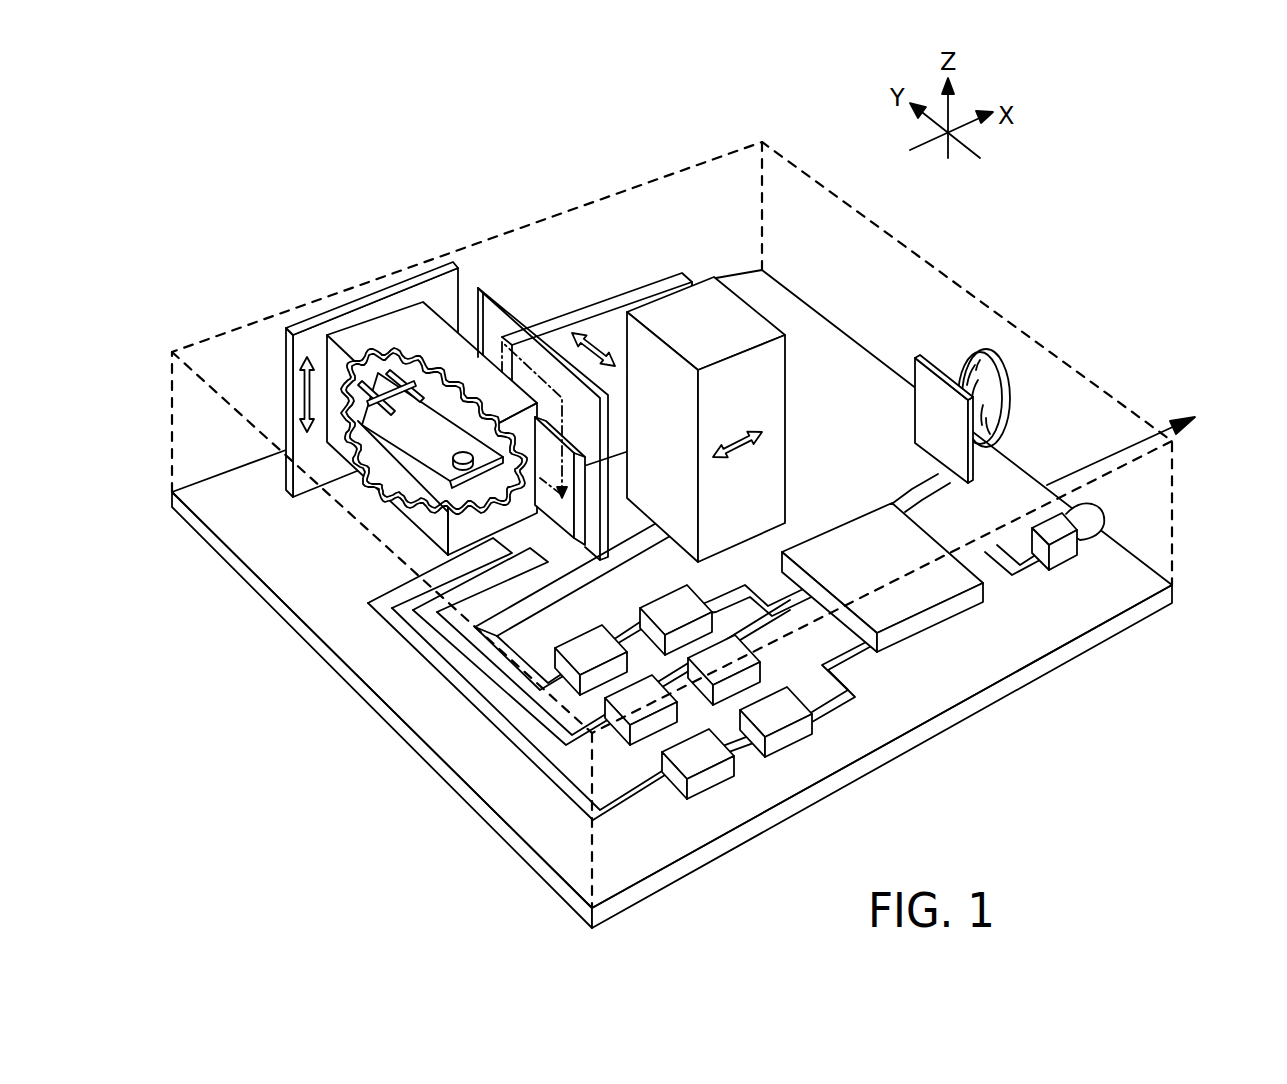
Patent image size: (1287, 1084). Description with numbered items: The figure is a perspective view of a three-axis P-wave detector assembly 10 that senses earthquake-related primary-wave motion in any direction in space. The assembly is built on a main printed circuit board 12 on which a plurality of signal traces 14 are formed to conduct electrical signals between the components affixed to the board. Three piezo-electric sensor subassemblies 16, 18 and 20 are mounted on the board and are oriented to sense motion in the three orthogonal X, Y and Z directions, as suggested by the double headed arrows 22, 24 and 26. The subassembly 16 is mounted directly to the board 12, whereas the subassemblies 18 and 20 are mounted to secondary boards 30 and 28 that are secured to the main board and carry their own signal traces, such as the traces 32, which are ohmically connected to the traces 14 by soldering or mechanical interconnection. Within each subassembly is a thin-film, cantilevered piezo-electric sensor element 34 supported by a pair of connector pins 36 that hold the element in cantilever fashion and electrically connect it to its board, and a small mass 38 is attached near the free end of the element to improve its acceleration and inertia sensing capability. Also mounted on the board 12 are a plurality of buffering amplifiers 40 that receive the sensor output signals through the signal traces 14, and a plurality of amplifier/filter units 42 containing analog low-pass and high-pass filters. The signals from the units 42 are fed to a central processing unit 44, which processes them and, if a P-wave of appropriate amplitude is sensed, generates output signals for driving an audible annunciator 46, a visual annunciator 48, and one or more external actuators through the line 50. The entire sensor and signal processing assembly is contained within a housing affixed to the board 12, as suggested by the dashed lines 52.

The detector assembly 10 is at (672, 599).
The main printed circuit board 12 is at (518, 852).
The signal traces 14 is at (488, 630).
The piezo-electric sensor subassembly 16 is at (735, 383).
The piezo-electric sensor subassembly 18 is at (597, 360).
The piezo-electric sensor subassembly 20 is at (426, 408).
The double headed arrow 22 is at (742, 457).
The double headed arrow 24 is at (600, 340).
The double headed arrow 26 is at (297, 395).
The secondary board 28 is at (342, 357).
The secondary board 30 is at (500, 297).
The signal traces 32 is at (577, 523).
The piezo-electric sensor element 34 is at (423, 448).
The connector pins 36 is at (405, 362).
The small mass 38 is at (418, 452).
The buffering amplifiers 40 is at (703, 778).
The amplifier/filter units 42 is at (797, 743).
The central processing unit 44 is at (960, 612).
The audible annunciator 46 is at (983, 347).
The visual annunciator 48 is at (1093, 530).
The line 50 is at (1042, 490).
The dashed lines 52 is at (950, 277).